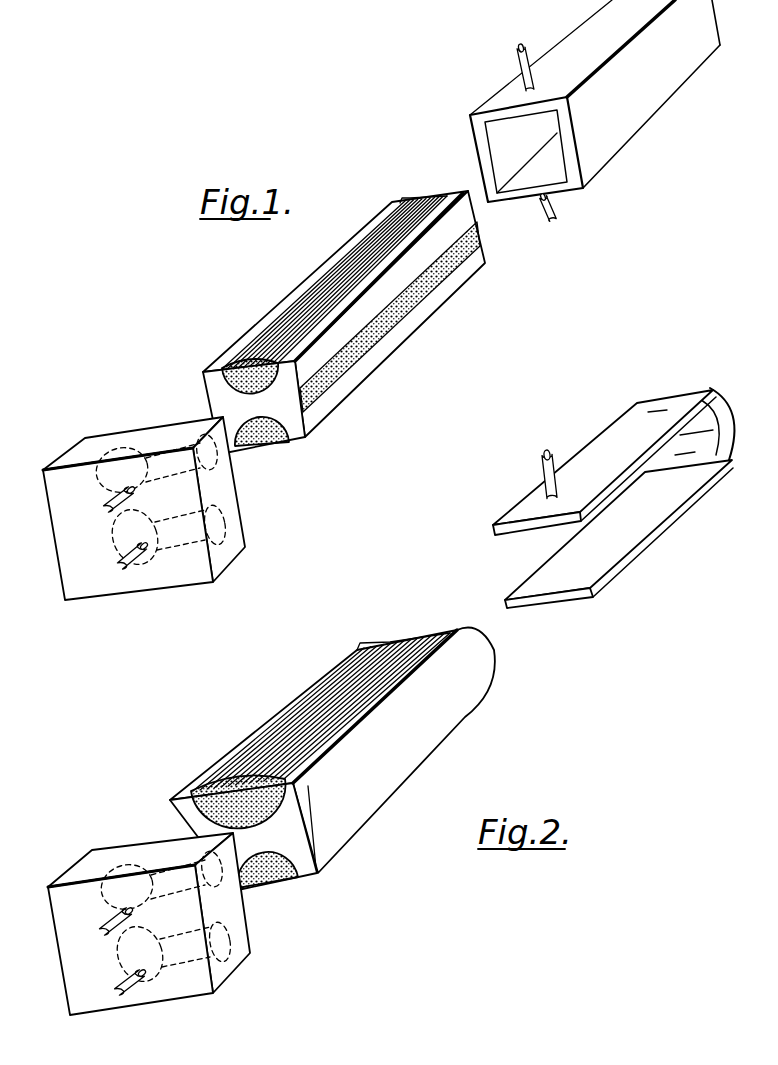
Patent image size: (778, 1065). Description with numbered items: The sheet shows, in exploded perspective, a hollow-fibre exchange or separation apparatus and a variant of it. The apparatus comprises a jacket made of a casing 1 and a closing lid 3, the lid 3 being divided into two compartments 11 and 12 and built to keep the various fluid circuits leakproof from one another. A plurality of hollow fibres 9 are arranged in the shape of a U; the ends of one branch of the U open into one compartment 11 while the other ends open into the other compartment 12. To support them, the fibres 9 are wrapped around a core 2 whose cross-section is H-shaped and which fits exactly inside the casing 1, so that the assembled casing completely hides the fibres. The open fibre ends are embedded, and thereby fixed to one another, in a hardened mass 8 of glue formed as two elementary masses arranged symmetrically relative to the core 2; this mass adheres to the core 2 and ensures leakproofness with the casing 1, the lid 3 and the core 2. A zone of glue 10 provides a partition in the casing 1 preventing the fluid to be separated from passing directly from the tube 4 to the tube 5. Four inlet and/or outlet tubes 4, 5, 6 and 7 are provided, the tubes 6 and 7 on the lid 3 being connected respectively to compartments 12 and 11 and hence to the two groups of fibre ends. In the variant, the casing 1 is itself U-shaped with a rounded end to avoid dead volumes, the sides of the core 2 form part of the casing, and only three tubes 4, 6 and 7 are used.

In FIG. 1, the casing 1 is at (667, 97).
In FIG. 2, the casing 1 is at (654, 530).
In FIG. 1, the core 2 is at (398, 338).
In FIG. 2, the core 2 is at (463, 713).
In FIG. 1, the closing lid 3 is at (237, 517).
In FIG. 2, the closing lid 3 is at (243, 925).
In FIG. 1, the inlet and/or outlet tube 4 is at (554, 210).
In FIG. 1, the inlet and/or outlet tube 5 is at (518, 52).
In FIG. 2, the inlet and/or outlet tube 5 is at (541, 465).
In FIG. 1, the inlet and/or outlet tube 6 is at (136, 568).
In FIG. 2, the inlet and/or outlet tube 6 is at (114, 990).
In FIG. 1, the inlet and/or outlet tube 7 is at (113, 513).
In FIG. 2, the inlet and/or outlet tube 7 is at (100, 926).
In FIG. 1, the hardened mass 8 is at (256, 352).
In FIG. 2, the hardened mass 8 is at (208, 782).
In FIG. 1, the hollow fibres 9 is at (422, 192).
In FIG. 2, the hollow fibres 9 is at (417, 634).
In FIG. 1, the glue zone 10 is at (447, 262).
In FIG. 1, the compartment 11 is at (140, 460).
In FIG. 2, the compartment 11 is at (157, 877).
In FIG. 1, the compartment 12 is at (187, 522).
In FIG. 2, the compartment 12 is at (195, 943).